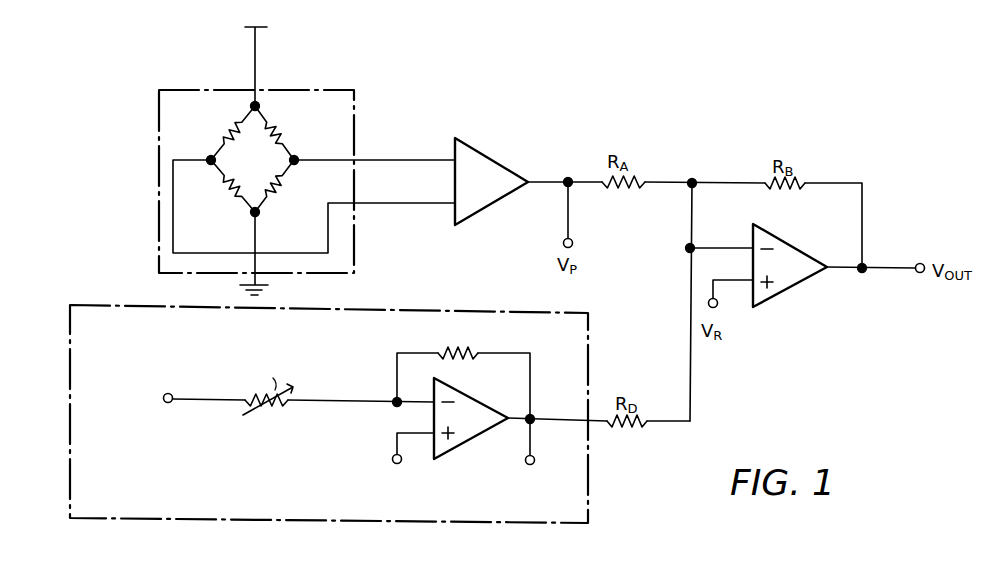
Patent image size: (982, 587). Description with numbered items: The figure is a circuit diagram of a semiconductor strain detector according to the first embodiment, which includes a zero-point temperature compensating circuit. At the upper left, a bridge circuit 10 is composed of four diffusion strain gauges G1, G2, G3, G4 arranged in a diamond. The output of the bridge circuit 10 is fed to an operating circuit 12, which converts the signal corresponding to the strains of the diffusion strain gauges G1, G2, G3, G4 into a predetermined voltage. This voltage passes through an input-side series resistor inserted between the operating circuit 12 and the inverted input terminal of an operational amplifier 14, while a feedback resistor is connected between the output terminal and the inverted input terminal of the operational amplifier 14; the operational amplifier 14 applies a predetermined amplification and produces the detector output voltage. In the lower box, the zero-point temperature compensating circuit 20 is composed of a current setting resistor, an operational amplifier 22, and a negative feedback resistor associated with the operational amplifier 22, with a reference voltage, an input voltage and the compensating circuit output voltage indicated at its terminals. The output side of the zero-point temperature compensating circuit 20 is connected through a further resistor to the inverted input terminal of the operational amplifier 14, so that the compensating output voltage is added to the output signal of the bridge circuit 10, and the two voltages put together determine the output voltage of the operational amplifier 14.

The bridge circuit 10 is at (306, 161).
The operating circuit 12 is at (514, 171).
The operational amplifier 14 is at (790, 288).
The zero-point temperature compensating circuit 20 is at (338, 428).
The operational amplifier 22 is at (466, 445).
The diffusion strain gauge G1 is at (226, 132).
The diffusion strain gauge G2 is at (225, 182).
The diffusion strain gauge G3 is at (279, 131).
The diffusion strain gauge G4 is at (272, 183).